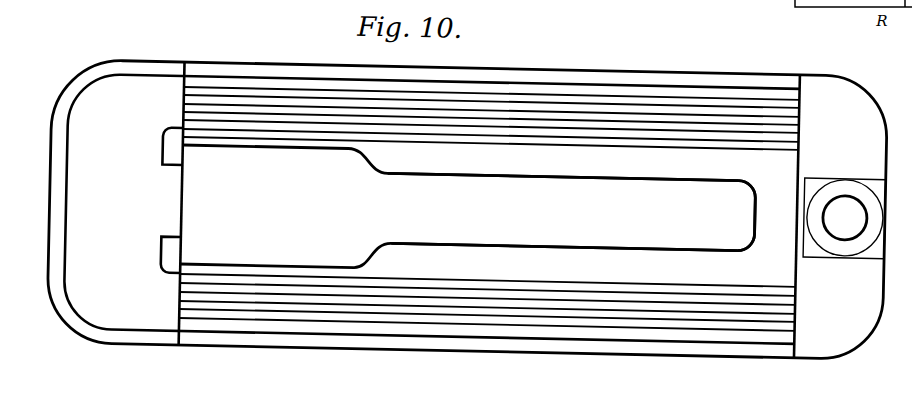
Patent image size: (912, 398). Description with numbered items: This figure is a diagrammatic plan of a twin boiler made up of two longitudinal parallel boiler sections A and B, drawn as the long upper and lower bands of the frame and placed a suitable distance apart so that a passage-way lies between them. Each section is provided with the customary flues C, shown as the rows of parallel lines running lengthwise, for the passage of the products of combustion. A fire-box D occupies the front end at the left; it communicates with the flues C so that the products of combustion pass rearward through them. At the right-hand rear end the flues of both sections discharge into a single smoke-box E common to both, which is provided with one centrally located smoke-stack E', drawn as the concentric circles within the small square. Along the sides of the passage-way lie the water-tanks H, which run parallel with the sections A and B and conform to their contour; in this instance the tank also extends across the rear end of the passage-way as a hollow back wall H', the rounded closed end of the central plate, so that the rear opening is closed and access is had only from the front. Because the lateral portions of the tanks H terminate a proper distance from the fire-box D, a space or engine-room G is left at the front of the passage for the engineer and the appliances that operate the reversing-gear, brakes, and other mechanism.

The boiler section A is at (431, 227).
The boiler section B is at (468, 198).
The flues C is at (489, 199).
The fire-box D is at (148, 203).
The smoke-box E is at (821, 217).
The smoke-stack E' is at (854, 218).
The engine-room G is at (468, 210).
The water-tanks H is at (563, 210).
The hollow back wall H' is at (762, 216).